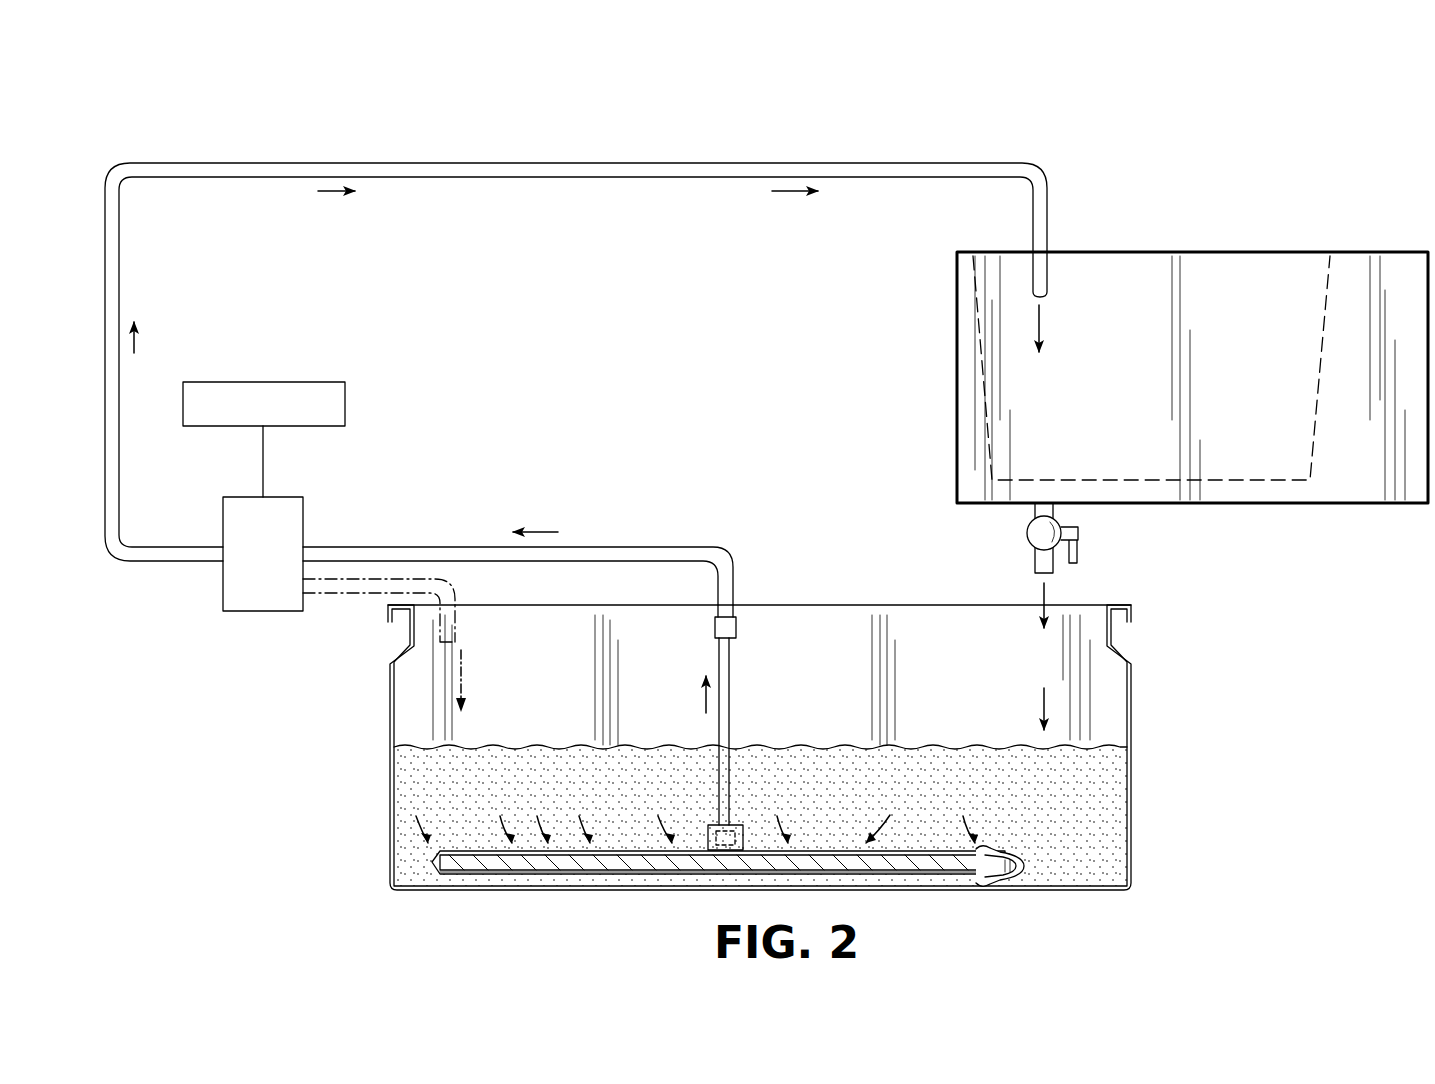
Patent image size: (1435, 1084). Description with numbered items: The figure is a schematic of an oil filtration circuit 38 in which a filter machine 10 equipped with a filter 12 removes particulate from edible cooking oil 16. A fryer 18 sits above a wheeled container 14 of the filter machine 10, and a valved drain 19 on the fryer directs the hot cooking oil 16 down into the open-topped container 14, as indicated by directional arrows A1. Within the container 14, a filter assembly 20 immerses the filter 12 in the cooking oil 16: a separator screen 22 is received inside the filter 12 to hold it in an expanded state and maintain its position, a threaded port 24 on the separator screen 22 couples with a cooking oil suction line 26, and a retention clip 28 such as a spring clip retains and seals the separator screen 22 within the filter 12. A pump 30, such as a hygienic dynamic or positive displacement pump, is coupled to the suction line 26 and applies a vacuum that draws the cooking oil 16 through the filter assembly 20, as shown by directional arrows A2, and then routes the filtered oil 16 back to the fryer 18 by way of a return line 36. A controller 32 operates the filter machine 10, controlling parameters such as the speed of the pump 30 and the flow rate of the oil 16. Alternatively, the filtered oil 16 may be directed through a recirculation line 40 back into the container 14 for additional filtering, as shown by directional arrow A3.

The filter machine 10 is at (1178, 648).
The filter 12 is at (432, 862).
The wheeled container 14 is at (1142, 718).
The edible cooking oil 16 is at (862, 746).
The fryer 18 is at (1276, 254).
The valved drain 19 is at (1028, 534).
The filter assembly 20 is at (546, 841).
The separator screen 22 is at (608, 866).
The threaded port 24 is at (743, 836).
The cooking oil suction line 26 is at (726, 558).
The retention clip 28 is at (1024, 880).
The pump 30 is at (230, 497).
The controller 32 is at (231, 382).
The return line 36 is at (541, 163).
The oil filtration circuit 38 is at (1256, 102).
The recirculation line 40 is at (380, 597).
The directional arrows A1 is at (1040, 598).
The directional arrows A2 is at (335, 192).
The directional arrow A3 is at (462, 666).